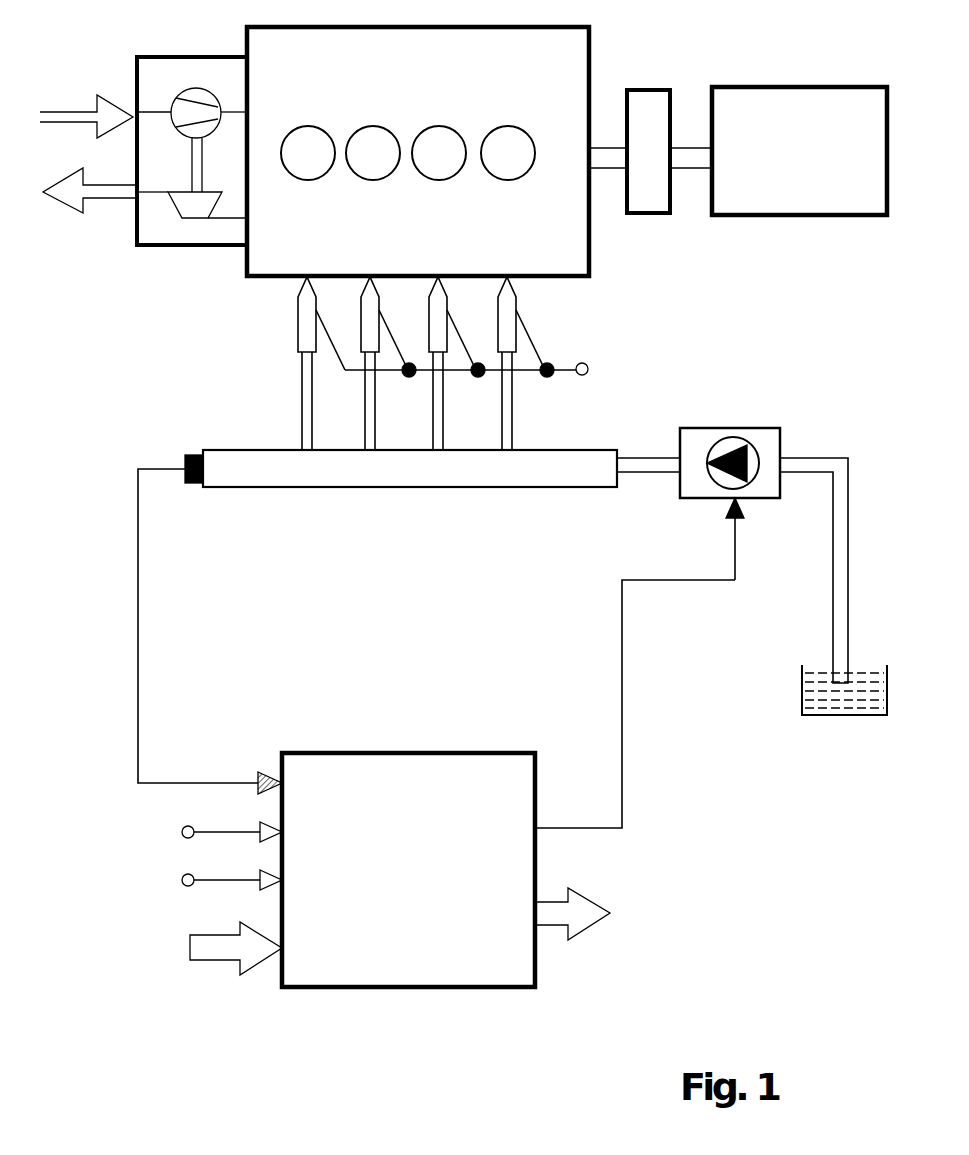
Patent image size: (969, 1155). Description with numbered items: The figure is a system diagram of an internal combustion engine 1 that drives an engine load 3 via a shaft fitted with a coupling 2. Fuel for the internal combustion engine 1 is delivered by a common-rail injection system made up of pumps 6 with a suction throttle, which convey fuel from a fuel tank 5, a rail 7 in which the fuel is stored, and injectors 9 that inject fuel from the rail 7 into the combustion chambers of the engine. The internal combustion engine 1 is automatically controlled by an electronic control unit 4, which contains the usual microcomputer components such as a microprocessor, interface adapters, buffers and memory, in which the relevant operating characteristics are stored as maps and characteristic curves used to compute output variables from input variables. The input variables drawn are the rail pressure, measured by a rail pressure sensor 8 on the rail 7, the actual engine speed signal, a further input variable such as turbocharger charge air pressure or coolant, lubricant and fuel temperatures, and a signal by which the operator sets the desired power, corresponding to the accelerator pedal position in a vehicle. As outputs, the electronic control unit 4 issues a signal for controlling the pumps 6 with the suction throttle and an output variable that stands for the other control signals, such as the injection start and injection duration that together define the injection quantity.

The internal combustion engine 1 is at (556, 253).
The coupling 2 is at (658, 164).
The engine load 3 is at (806, 164).
The electronic control unit 4 is at (410, 950).
The fuel tank 5 is at (818, 680).
The pumps 6 is at (725, 428).
The rail 7 is at (363, 488).
The rail pressure sensor 8 is at (192, 453).
The injectors 9 is at (305, 312).